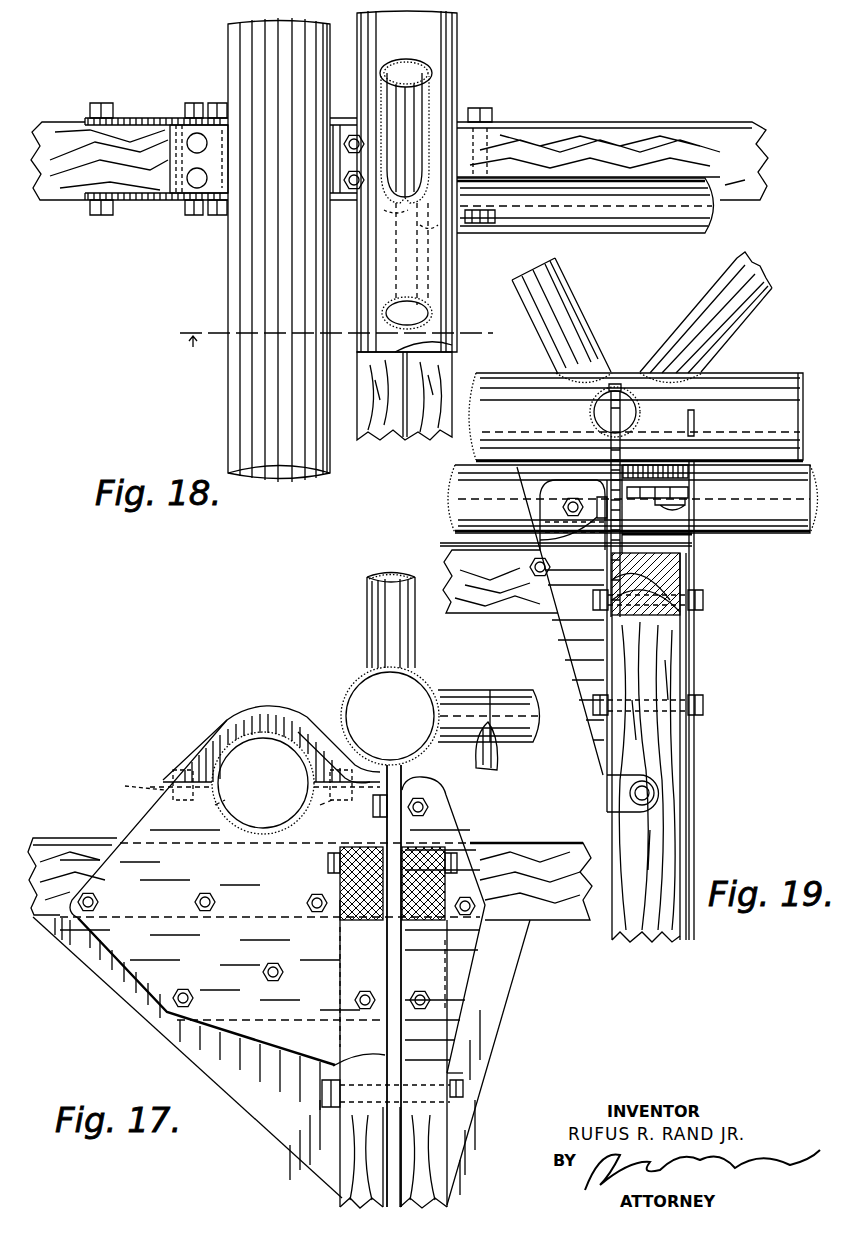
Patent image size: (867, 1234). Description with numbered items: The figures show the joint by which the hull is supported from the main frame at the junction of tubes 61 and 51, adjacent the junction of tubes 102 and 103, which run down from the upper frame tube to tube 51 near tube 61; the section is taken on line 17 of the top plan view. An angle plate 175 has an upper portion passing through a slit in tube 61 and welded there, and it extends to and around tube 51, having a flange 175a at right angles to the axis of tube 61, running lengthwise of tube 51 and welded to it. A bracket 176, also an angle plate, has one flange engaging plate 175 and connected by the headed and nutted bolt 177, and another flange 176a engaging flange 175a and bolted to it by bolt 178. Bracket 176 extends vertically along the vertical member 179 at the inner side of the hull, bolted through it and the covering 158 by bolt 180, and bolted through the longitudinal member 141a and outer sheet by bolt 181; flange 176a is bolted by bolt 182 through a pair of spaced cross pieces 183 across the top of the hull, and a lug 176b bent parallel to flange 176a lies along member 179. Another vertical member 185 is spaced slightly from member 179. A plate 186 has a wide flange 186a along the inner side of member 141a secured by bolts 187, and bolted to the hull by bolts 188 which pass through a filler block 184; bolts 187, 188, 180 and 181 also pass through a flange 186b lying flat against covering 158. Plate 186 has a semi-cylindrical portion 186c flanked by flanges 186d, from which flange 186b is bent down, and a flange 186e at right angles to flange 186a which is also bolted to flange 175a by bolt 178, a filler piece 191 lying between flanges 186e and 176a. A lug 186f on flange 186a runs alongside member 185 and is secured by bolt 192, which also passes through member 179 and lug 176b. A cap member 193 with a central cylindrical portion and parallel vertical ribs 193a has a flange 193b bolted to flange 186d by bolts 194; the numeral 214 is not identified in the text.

In FIG. 18, the section line 17— 17 is at (337, 333).
In FIG. 18, the main frame member 51 is at (454, 45).
In FIG. 19, the main frame member 51 is at (777, 374).
In FIG. 17, the main frame member 51 is at (432, 684).
In FIG. 18, the connecting tube 61 is at (714, 210).
In FIG. 19, the connecting tube 61 is at (640, 412).
In FIG. 17, the connecting tube 61 is at (518, 688).
In FIG. 18, the tube 102 is at (420, 270).
In FIG. 19, the tube 102 is at (560, 270).
In FIG. 17, the tube 102 is at (410, 643).
In FIG. 18, the tube 103 is at (413, 100).
In FIG. 19, the tube 103 is at (695, 305).
In FIG. 18, the longitudinally extending hull member 141a is at (640, 120).
In FIG. 19, the longitudinally extending hull member 141a is at (500, 581).
In FIG. 17, the longitudinally extending hull member 141a is at (42, 915).
In FIG. 19, the hull side covering 158 is at (695, 641).
In FIG. 19, the angle plate 175 is at (587, 453).
In FIG. 17, the angle plate 175 is at (474, 774).
In FIG. 19, the flange of angle plate 175a is at (475, 462).
In FIG. 17, the flange of angle plate 175a is at (333, 740).
In FIG. 19, the bracket 176 is at (603, 733).
In FIG. 17, the bracket 176 is at (410, 831).
In FIG. 19, the flange of bracket 176a is at (557, 655).
In FIG. 17, the flange of bracket 176a is at (402, 1032).
In FIG. 19, the lug of bracket 176b is at (640, 813).
In FIG. 17, the lug of bracket 176b is at (475, 1109).
In FIG. 19, the headed and nutted bolt 177 is at (530, 535).
In FIG. 17, the headed and nutted bolt 177 is at (430, 808).
In FIG. 18, the headed and nutted bolt 178 is at (390, 247).
In FIG. 19, the headed and nutted bolt 178 is at (527, 503).
In FIG. 17, the headed and nutted bolt 178 is at (425, 834).
In FIG. 19, the vertical hull member 179 is at (672, 762).
In FIG. 17, the vertical hull member 179 is at (440, 1135).
In FIG. 19, the headed and nutted bolt 180 is at (703, 707).
In FIG. 17, the headed and nutted bolt 180 is at (431, 998).
In FIG. 18, the headed and nutted bolt 181 is at (483, 110).
In FIG. 19, the headed and nutted bolt 181 is at (705, 600).
In FIG. 17, the headed and nutted bolt 181 is at (472, 912).
In FIG. 19, the headed and nutted bolt 182 is at (539, 579).
In FIG. 17, the headed and nutted bolt 182 is at (328, 859).
In FIG. 17, the cross pieces 183 is at (400, 925).
In FIG. 17, the filler block 184 is at (230, 1070).
In FIG. 17, the vertical member 185 is at (340, 1196).
In FIG. 17, the plate 186 is at (128, 969).
In FIG. 18, the wide flange of plate 186a is at (129, 201).
In FIG. 17, the wide flange of plate 186a is at (137, 857).
In FIG. 19, the flange of plate 186b is at (692, 563).
In FIG. 19, the semi-cylindrical portion 186c is at (686, 535).
In FIG. 17, the semi-cylindrical portion 186c is at (227, 823).
In FIG. 19, the flanges of plate 186d is at (692, 504).
In FIG. 17, the flanges of plate 186d is at (167, 791).
In FIG. 17, the flange of plate 186e is at (282, 1110).
In FIG. 17, the lug of flange 186f is at (313, 1153).
In FIG. 18, the headed and nutted bolts 187 is at (102, 217).
In FIG. 17, the headed and nutted bolts 187 is at (99, 903).
In FIG. 17, the headed and nutted bolts 188 is at (285, 979).
In FIG. 17, the filler piece 191 is at (392, 964).
In FIG. 19, the headed and nutted bolt 192 is at (656, 793).
In FIG. 17, the headed and nutted bolt 192 is at (467, 1092).
In FIG. 18, the cap member 193 is at (266, 182).
In FIG. 18, the ribs of cap member 193a is at (243, 118).
In FIG. 19, the ribs of cap member 193a is at (695, 423).
In FIG. 17, the ribs of cap member 193a is at (224, 725).
In FIG. 18, the flange of cap member 193b is at (182, 133).
In FIG. 19, the flange of cap member 193b is at (695, 470).
In FIG. 17, the flange of cap member 193b is at (168, 770).
In FIG. 18, the headed and nutted bolts 194 is at (193, 132).
In FIG. 17, the headed and nutted bolts 194 is at (189, 801).
In FIG. 18, the tubular post 214 is at (236, 52).
In FIG. 19, the tubular post 214 is at (460, 470).
In FIG. 17, the tubular post 214 is at (257, 740).